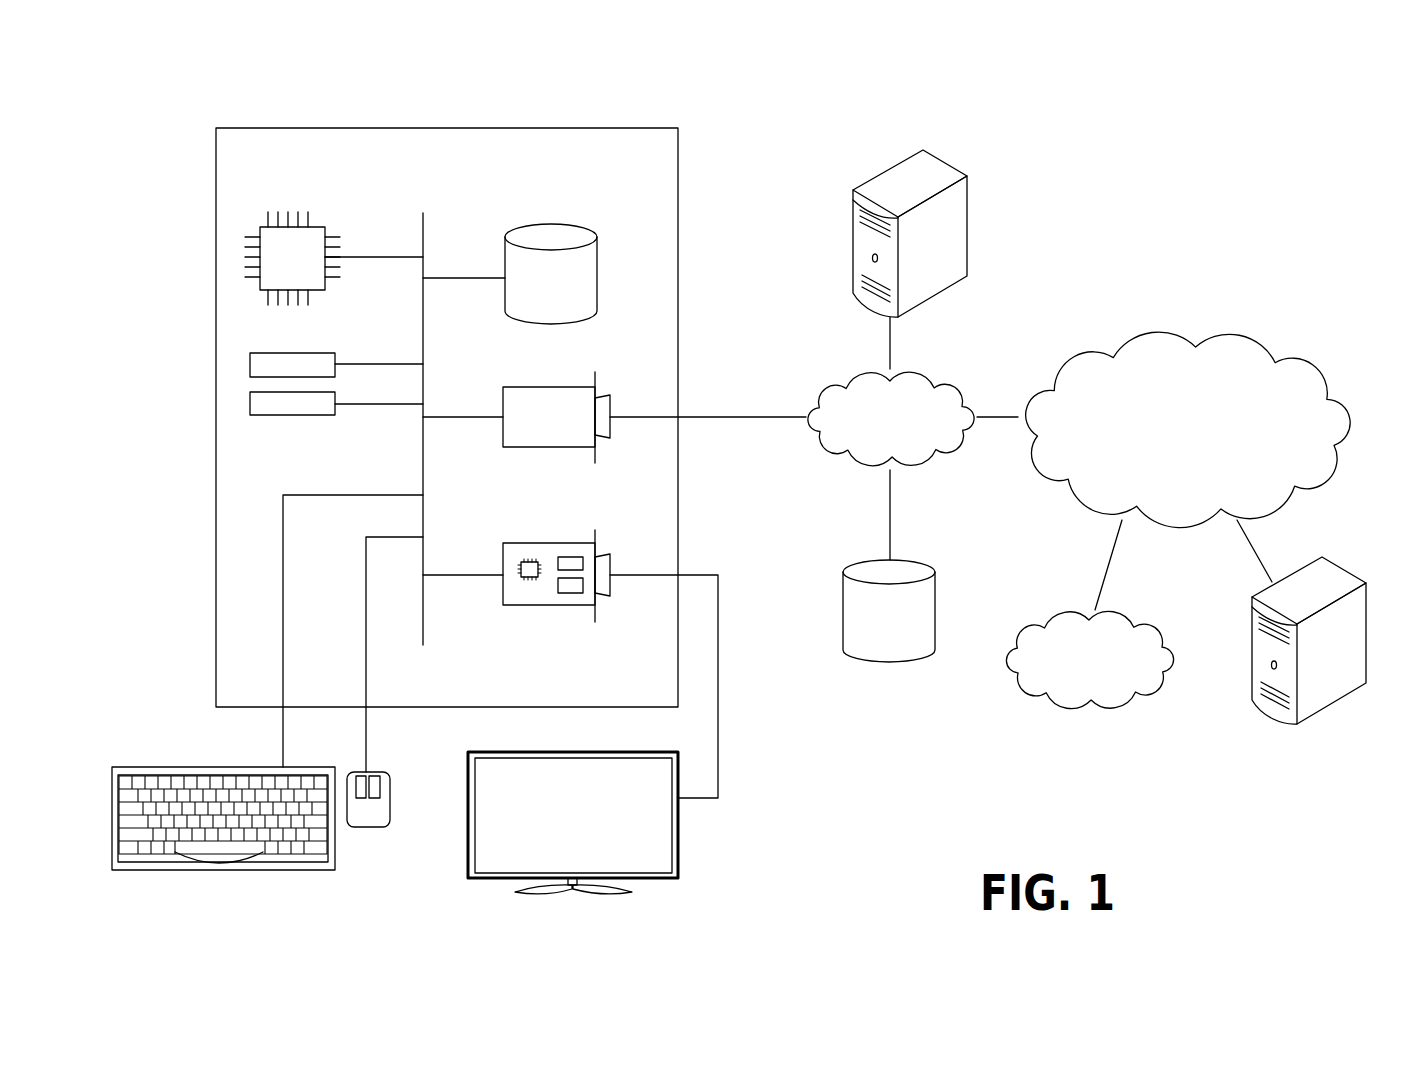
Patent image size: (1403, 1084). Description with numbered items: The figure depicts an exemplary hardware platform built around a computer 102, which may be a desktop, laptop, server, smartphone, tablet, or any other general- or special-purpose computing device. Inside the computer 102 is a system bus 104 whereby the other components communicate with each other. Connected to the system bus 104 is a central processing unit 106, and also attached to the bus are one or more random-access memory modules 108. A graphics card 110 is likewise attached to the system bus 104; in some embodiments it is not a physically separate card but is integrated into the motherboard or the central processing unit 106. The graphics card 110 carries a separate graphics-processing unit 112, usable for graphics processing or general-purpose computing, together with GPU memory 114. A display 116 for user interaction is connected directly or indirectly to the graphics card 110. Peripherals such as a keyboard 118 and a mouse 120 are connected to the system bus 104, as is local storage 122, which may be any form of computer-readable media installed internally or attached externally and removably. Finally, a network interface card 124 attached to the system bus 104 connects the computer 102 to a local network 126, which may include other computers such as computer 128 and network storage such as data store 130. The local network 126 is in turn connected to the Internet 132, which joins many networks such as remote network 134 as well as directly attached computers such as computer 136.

The computer 102 is at (627, 128).
The system bus 104 is at (425, 227).
The central processing unit 106 is at (317, 223).
The memory 108 is at (335, 398).
The graphics card 110 is at (502, 557).
The graphics-processing unit 112 is at (528, 580).
The GPU memory 114 is at (568, 593).
The display 116 is at (679, 856).
The keyboard 118 is at (225, 872).
The mouse 120 is at (366, 829).
The local storage 122 is at (598, 258).
The network interface card 124 is at (502, 398).
The local network 126 is at (947, 370).
The computer 128 is at (947, 162).
The data store 130 is at (925, 562).
The Internet 132 is at (1233, 332).
The remote network 134 is at (1150, 608).
The computer 136 is at (1338, 562).